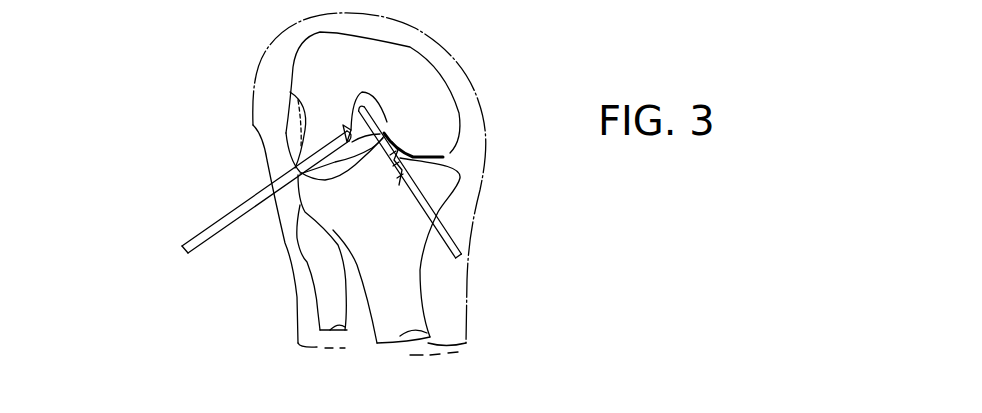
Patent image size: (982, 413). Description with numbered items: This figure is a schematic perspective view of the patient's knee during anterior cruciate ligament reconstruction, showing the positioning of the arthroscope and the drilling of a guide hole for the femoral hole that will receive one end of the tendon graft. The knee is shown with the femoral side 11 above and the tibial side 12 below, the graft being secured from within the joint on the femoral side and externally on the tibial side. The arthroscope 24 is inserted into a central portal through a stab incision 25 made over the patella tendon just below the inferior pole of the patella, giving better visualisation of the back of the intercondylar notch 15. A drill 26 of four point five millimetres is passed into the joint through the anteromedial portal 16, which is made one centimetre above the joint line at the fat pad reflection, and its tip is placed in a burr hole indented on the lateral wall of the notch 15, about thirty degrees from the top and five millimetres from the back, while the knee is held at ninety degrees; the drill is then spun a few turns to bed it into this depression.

The femoral side 11 is at (466, 33).
The tibial side 12 is at (480, 295).
The intercondylar notch 15 is at (385, 133).
The anteromedial portal 16 is at (458, 171).
The arthroscope 24 is at (225, 229).
The stab incision 25 is at (343, 131).
The drill 26 is at (452, 236).